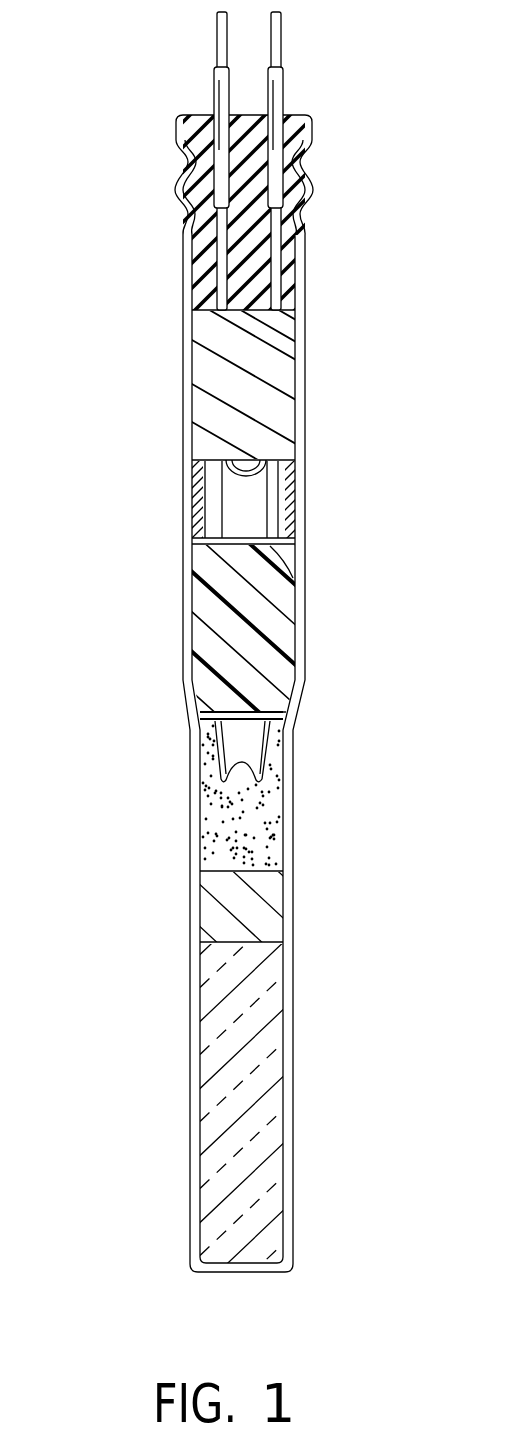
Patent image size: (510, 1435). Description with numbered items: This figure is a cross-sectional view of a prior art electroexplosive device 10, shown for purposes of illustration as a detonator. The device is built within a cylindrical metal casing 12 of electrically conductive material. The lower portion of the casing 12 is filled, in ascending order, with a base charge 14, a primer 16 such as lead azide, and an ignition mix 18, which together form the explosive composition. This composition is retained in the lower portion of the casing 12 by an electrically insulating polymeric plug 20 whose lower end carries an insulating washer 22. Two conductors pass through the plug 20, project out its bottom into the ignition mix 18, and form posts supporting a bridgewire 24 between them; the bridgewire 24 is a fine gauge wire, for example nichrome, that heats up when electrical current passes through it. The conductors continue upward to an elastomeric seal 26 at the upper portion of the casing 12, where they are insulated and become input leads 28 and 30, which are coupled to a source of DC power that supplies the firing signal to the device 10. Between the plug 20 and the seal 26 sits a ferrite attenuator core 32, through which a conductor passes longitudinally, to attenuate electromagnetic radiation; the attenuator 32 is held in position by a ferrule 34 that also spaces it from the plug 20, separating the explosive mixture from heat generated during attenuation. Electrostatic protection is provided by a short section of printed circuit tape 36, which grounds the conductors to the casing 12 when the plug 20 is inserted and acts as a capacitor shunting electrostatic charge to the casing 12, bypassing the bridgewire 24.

The electroexplosive device 10 is at (340, 353).
The cylindrical metal casing 12 is at (305, 433).
The base charge 14 is at (272, 1133).
The primer 16 is at (265, 920).
The ignition mix 18 is at (272, 823).
The electrically insulating polymeric plug 20 is at (283, 641).
The insulating washer 22 is at (298, 692).
The bridgewire 24 is at (237, 780).
The elastomeric seal 26 is at (200, 290).
The input lead 28 is at (213, 88).
The input lead 30 is at (285, 92).
The ferrite attenuator core 32 is at (205, 413).
The ferrule 34 is at (195, 508).
The printed circuit tape 36 is at (304, 567).